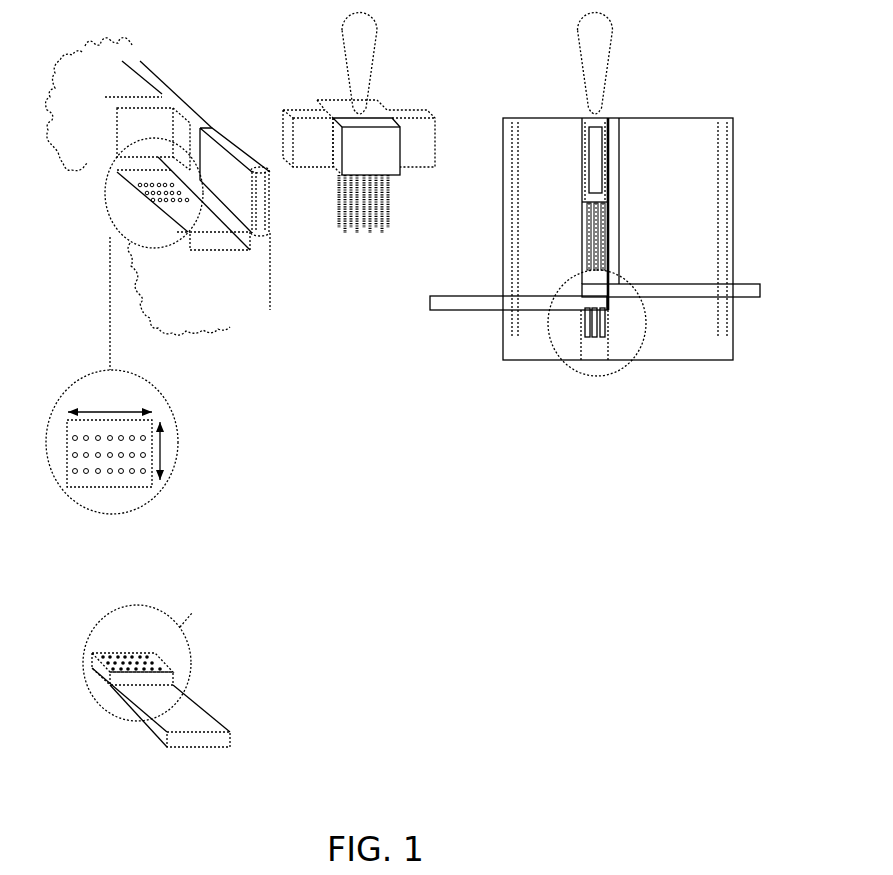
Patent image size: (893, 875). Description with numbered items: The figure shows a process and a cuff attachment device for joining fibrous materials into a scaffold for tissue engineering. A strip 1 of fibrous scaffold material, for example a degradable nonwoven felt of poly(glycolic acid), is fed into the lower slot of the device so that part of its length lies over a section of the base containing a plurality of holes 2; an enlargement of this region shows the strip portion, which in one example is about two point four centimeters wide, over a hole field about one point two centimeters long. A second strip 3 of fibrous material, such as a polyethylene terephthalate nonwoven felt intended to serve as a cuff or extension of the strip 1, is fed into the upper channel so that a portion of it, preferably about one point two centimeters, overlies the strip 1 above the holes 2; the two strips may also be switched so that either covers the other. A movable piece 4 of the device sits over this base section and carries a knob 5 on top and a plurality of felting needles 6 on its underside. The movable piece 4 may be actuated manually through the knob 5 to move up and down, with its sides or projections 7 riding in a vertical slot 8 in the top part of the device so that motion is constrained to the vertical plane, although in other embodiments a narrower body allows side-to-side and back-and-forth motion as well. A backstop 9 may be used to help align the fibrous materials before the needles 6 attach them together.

The strip 1 is at (463, 288).
The holes 2 is at (600, 375).
The second strip 3 is at (693, 280).
The movable piece 4 is at (366, 146).
The knob 5 is at (378, 60).
The needles 6 is at (397, 203).
The sides or projections 7 is at (592, 147).
The vertical slot 8 is at (212, 125).
The backstop 9 is at (152, 120).